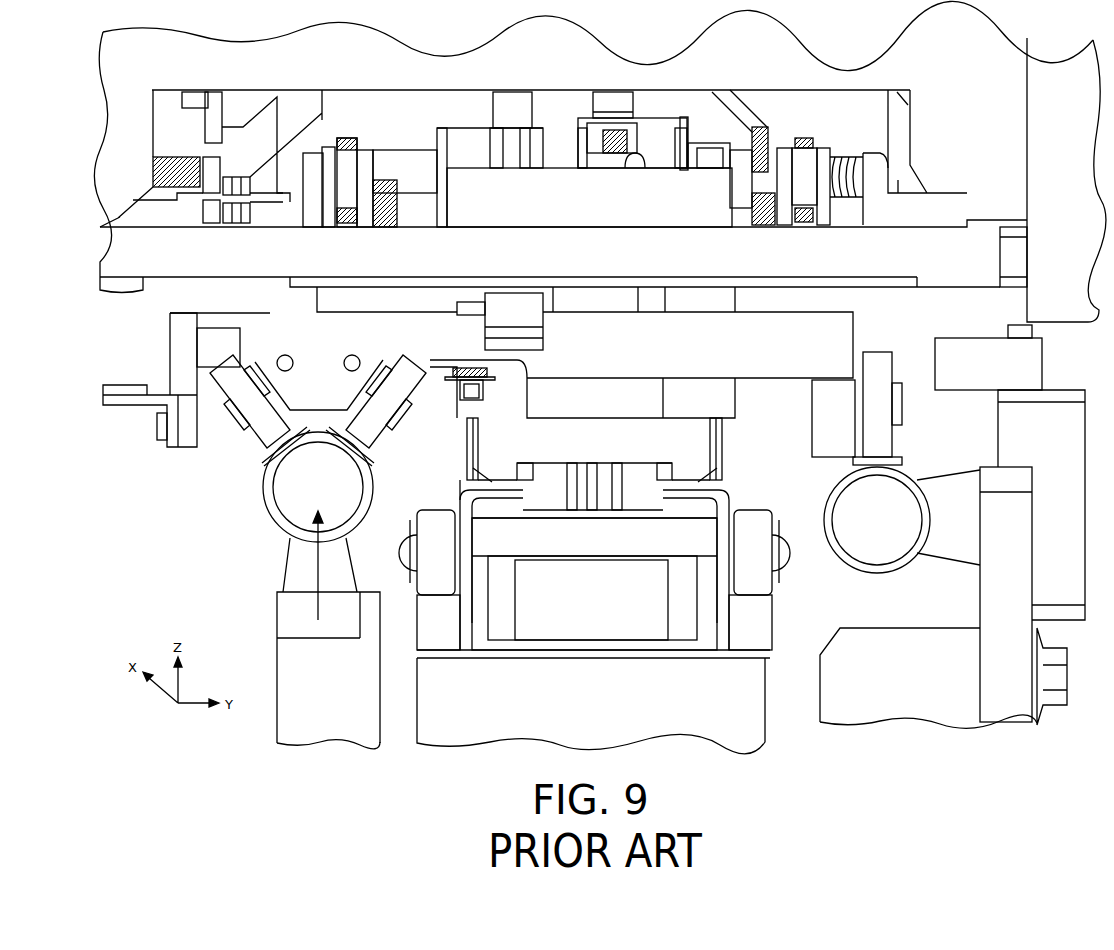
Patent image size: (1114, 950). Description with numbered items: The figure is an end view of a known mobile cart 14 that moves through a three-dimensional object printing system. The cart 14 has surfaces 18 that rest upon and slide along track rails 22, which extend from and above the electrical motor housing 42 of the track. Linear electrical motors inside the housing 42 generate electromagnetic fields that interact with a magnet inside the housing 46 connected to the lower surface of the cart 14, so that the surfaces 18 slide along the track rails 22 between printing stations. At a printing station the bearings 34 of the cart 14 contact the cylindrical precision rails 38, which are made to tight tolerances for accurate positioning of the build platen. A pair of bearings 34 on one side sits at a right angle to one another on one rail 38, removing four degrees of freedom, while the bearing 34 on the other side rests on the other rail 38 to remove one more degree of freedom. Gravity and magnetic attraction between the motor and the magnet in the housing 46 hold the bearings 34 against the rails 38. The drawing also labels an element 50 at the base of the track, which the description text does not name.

The cart 14 is at (847, 313).
The surfaces 18 is at (467, 470).
The track rails 22 is at (417, 622).
The bearings 34 is at (255, 362).
The precision rails 38 is at (270, 507).
The electrical motor housing 42 is at (467, 732).
The magnet housing 46 is at (546, 630).
The base plate 50 is at (588, 657).